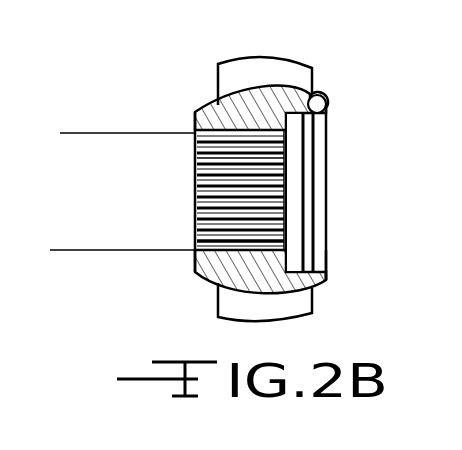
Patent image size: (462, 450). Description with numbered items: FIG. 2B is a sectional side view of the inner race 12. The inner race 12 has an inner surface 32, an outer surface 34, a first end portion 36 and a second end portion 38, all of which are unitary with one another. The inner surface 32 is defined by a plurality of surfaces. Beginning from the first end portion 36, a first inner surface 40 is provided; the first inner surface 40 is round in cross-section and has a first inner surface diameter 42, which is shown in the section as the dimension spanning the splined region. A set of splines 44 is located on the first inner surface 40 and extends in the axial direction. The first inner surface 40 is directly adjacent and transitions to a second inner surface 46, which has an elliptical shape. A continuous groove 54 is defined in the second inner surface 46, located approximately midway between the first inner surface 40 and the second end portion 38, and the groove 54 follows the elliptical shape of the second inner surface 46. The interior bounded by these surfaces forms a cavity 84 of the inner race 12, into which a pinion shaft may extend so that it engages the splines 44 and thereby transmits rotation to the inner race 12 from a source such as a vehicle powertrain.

The inner race 12 is at (278, 58).
The inner surface 32 is at (246, 158).
The outer surface 34 is at (205, 92).
The first end portion 36 is at (188, 279).
The second end portion 38 is at (345, 272).
The first inner surface 40 is at (220, 238).
The first inner surface diameter 42 is at (65, 140).
The splines 44 is at (202, 156).
The second inner surface 46 is at (325, 252).
The groove 54 is at (326, 102).
The cavity 84 is at (318, 173).